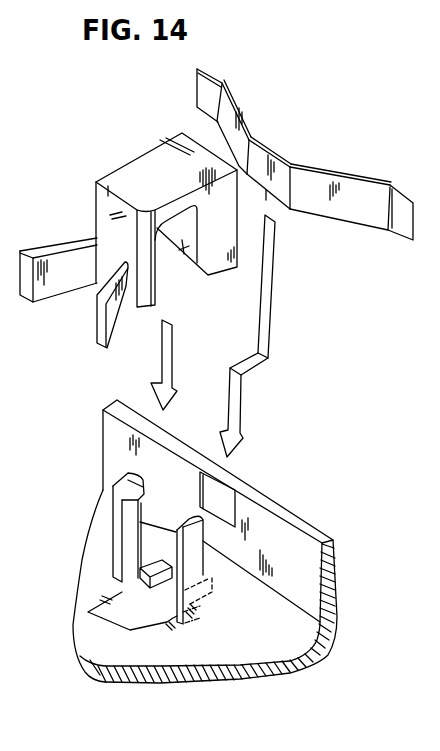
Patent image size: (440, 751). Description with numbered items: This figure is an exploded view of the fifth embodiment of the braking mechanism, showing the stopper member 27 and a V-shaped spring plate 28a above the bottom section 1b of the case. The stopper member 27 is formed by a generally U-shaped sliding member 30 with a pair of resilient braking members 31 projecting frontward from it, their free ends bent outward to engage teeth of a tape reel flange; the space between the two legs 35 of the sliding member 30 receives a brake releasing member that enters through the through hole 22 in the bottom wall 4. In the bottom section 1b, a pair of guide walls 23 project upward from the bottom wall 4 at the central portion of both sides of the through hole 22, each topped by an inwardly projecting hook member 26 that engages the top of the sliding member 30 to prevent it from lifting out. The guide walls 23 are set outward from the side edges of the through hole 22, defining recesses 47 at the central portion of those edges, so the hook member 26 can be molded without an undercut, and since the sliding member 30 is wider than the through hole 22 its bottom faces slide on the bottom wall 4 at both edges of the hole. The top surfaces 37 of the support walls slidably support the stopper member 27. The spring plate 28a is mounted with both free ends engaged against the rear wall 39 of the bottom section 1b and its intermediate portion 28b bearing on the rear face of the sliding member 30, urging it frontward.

The stopper member 27 is at (166, 135).
The sliding member 30 is at (135, 175).
The resilient braking members 31 is at (63, 258).
The legs 35 is at (186, 252).
The spring plate 28a is at (352, 185).
The intermediate portion 28b is at (267, 148).
The bottom section 1b is at (340, 617).
The bottom wall 4 is at (170, 680).
The rear wall 39 is at (268, 524).
The guide walls 23 is at (113, 532).
The hook member 26 is at (153, 521).
The through hole 22 is at (128, 622).
The top surfaces 37 is at (105, 602).
The recesses 47 is at (145, 590).